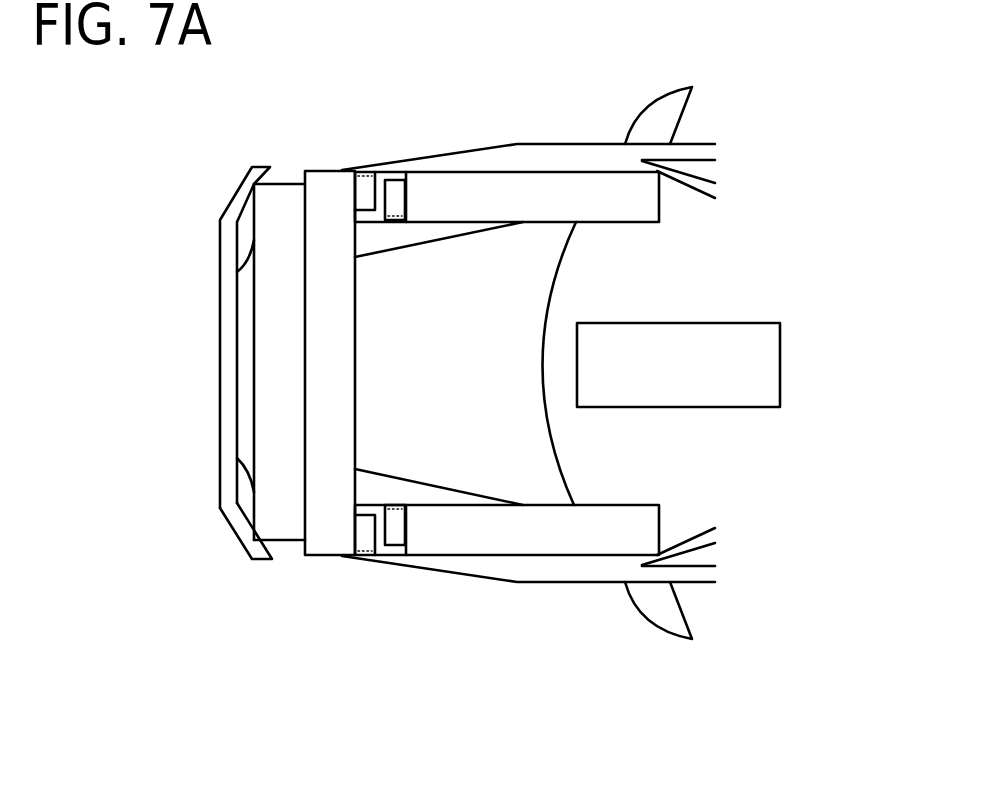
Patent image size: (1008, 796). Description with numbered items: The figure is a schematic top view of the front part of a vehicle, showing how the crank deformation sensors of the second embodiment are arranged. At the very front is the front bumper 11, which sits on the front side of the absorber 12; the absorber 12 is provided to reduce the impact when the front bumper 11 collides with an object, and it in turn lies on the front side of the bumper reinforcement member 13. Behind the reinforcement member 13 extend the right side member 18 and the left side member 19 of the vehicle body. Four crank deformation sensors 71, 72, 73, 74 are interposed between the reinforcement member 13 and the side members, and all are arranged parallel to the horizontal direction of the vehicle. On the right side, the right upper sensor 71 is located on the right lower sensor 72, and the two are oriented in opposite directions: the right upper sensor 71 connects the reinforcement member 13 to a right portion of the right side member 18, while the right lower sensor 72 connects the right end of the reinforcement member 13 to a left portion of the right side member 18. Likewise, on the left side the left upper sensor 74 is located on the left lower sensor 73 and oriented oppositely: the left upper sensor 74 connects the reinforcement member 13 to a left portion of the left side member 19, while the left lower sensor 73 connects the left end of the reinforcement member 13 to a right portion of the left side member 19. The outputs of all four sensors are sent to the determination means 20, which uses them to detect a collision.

The front bumper 11 is at (237, 343).
The absorber 12 is at (250, 507).
The reinforcement member 13 is at (315, 556).
The right side member 18 is at (478, 172).
The left side member 19 is at (472, 555).
The determination means 20 is at (780, 342).
The right upper sensor 71 is at (395, 172).
The right lower sensor 72 is at (398, 222).
The left lower sensor 73 is at (397, 505).
The left upper sensor 74 is at (393, 555).